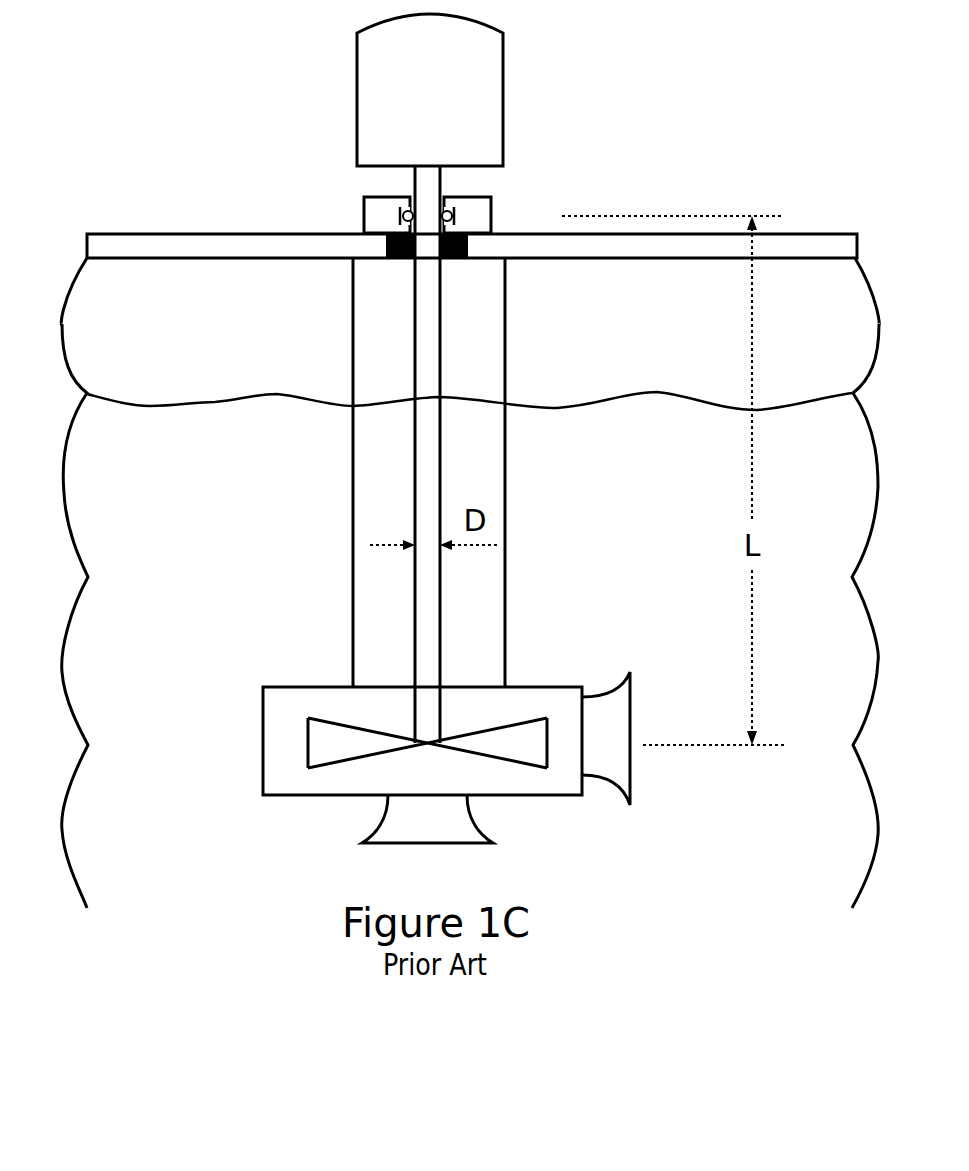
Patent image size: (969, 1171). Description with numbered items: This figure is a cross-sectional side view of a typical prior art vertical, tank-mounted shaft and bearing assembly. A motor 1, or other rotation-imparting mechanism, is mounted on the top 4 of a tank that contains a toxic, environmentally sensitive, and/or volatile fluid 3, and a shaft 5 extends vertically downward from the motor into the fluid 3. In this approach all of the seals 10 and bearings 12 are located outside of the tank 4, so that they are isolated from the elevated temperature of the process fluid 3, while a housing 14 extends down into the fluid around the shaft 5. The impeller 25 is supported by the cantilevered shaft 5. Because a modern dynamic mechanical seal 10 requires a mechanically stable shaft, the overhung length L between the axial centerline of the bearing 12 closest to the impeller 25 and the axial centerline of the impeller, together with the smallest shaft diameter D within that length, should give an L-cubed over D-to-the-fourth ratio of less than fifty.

The motor 1 is at (357, 118).
The bearing 12 is at (364, 213).
The tank top 4 is at (207, 233).
The seal 10 is at (467, 246).
The housing 14 is at (353, 368).
The shaft 5 is at (415, 345).
The fluid 3 is at (662, 440).
The impeller 25 is at (307, 745).